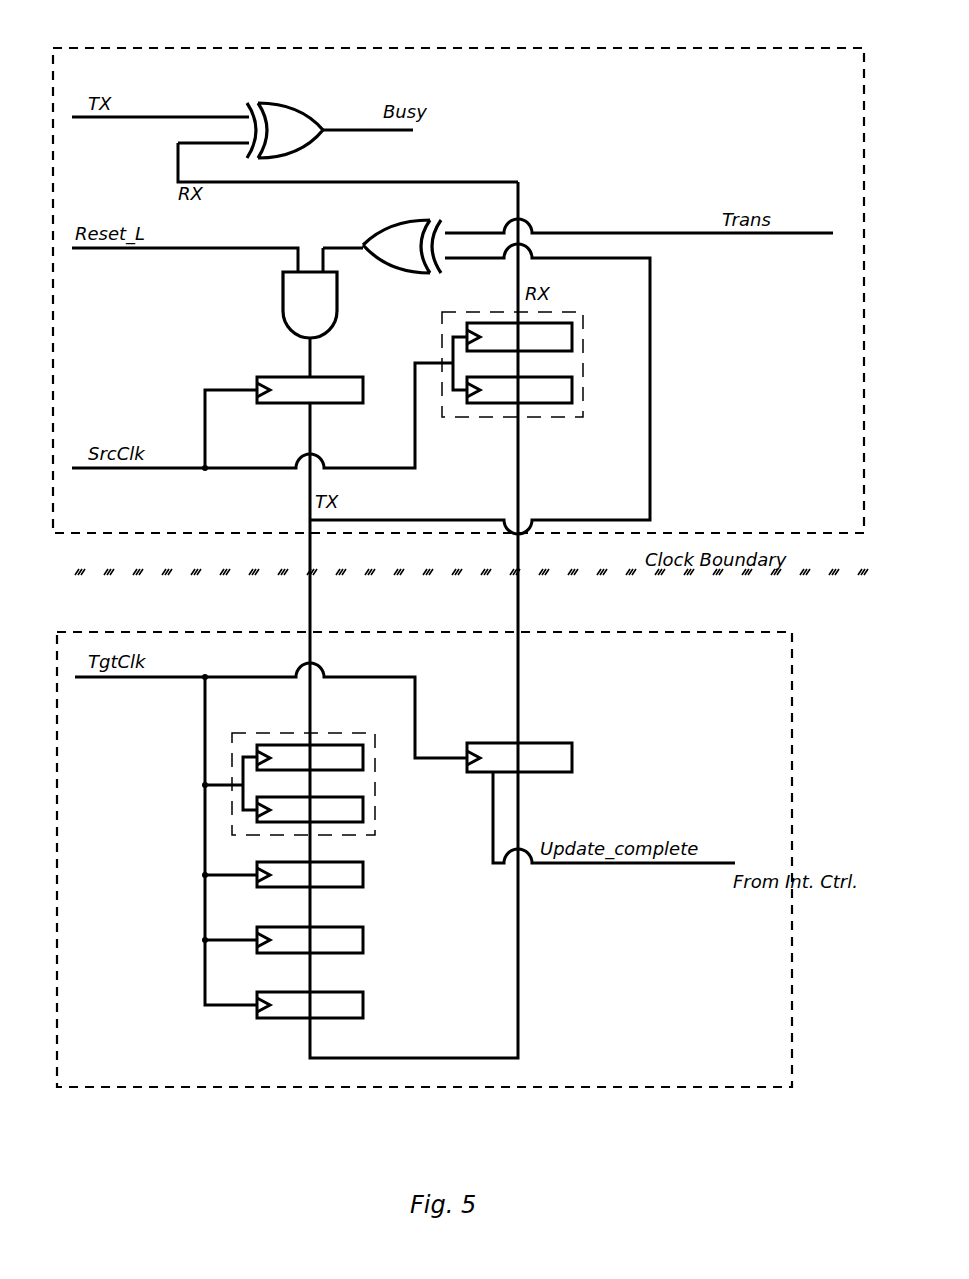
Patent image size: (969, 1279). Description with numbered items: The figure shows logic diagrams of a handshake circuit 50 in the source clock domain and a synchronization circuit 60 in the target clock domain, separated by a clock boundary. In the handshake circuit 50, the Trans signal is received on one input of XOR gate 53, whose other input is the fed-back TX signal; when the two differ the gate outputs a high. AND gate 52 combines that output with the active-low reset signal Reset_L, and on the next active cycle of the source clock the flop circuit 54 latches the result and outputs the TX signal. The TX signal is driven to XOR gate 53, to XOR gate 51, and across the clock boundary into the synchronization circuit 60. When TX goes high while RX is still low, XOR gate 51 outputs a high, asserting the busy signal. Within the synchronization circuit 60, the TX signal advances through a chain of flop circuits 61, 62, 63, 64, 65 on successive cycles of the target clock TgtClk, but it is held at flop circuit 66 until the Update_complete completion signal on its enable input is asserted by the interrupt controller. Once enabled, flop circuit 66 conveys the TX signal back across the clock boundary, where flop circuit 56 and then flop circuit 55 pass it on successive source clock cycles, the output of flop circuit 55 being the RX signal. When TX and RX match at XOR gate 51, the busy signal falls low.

The handshake circuit 50 is at (630, 46).
The XOR gate 51 is at (282, 100).
The AND gate 52 is at (280, 292).
The XOR gate 53 is at (390, 224).
The flop circuit 54 is at (270, 376).
The flop circuit 55 is at (573, 322).
The flop circuit 56 is at (573, 377).
The synchronization circuit 60 is at (792, 632).
The flop circuit 61 is at (343, 746).
The flop circuit 62 is at (363, 806).
The flop circuit 63 is at (366, 862).
The flop circuit 64 is at (366, 928).
The flop circuit 65 is at (364, 992).
The flop circuit 66 is at (573, 743).